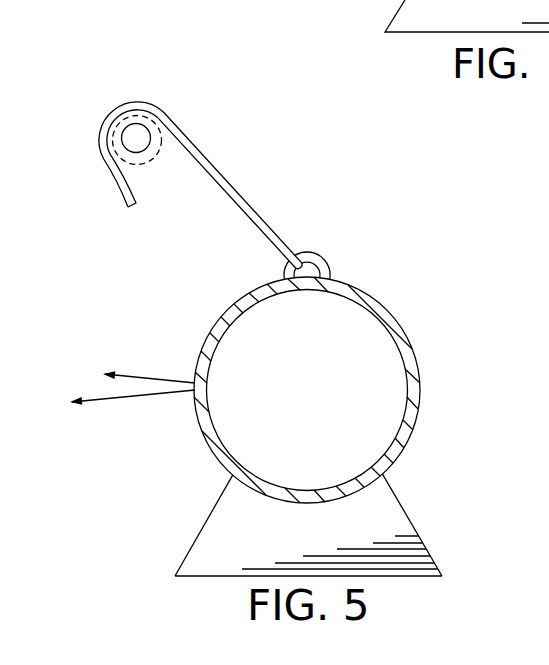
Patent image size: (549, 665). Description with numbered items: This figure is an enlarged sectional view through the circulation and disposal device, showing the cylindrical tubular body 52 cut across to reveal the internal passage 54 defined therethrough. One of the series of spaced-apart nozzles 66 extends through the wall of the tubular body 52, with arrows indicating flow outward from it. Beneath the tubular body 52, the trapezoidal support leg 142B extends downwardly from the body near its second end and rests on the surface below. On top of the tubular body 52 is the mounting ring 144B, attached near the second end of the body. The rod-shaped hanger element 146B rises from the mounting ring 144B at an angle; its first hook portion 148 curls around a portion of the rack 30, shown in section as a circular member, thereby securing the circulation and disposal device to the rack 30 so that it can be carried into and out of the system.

The rack 30 is at (148, 98).
The tubular body 52 is at (409, 326).
The internal passage 54 is at (378, 380).
The nozzles 66 is at (193, 410).
The support leg 142B is at (387, 522).
The mounting ring 144B is at (324, 257).
The hanger element 146B is at (193, 139).
The first hook portion 148 is at (97, 143).